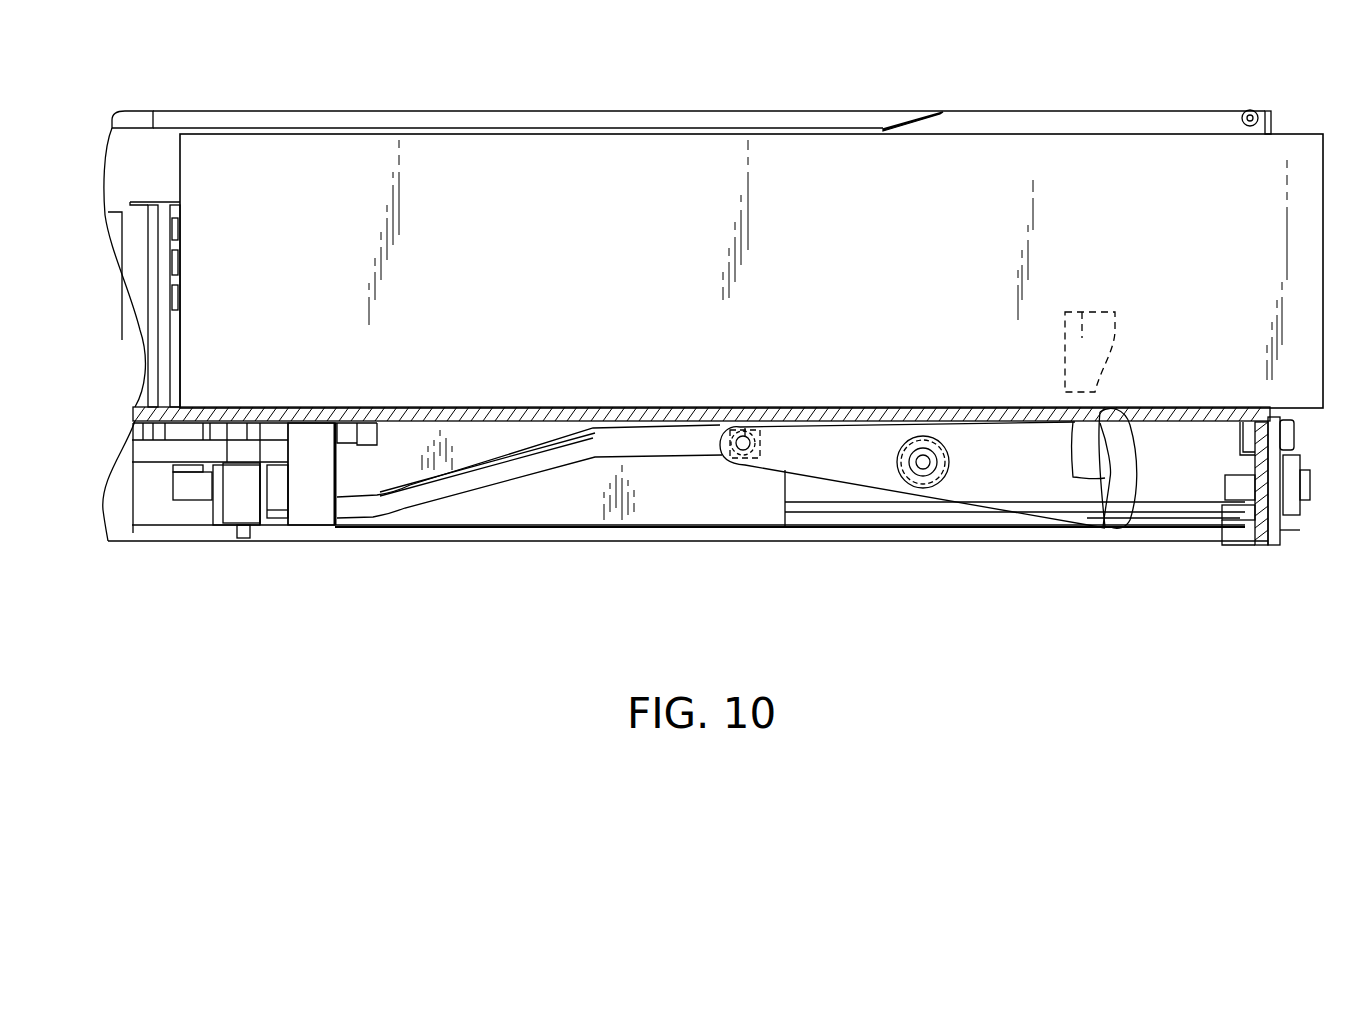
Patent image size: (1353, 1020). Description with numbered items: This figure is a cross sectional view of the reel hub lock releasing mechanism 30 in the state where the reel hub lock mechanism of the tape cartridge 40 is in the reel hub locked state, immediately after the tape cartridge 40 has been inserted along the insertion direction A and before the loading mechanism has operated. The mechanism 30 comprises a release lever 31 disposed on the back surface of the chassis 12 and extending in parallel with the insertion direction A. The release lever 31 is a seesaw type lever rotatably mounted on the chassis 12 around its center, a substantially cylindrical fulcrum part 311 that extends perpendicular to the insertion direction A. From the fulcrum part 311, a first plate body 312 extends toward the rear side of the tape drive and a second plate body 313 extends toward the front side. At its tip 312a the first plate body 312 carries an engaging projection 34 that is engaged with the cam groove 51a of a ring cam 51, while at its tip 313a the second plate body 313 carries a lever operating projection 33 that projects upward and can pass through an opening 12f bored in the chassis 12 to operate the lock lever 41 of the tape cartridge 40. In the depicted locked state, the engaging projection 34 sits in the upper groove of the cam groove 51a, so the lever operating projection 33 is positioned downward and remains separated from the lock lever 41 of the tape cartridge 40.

The chassis 12 is at (445, 410).
The opening 12f is at (1068, 410).
The reel hub lock releasing mechanism 30 is at (930, 522).
The release lever 31 is at (1110, 515).
The fulcrum part 311 is at (938, 488).
The first plate body 312 is at (808, 468).
The tip 312a is at (737, 468).
The second plate body 313 is at (1040, 500).
The tip 313a is at (1100, 497).
The lever operating projection 33 is at (1120, 438).
The engaging projection 34 is at (728, 405).
The tape cartridge 40 is at (1030, 180).
The lock lever 41 is at (1080, 305).
The ring cam 51 is at (652, 490).
The cam groove 51a is at (517, 470).
The insertion direction A is at (1333, 283).